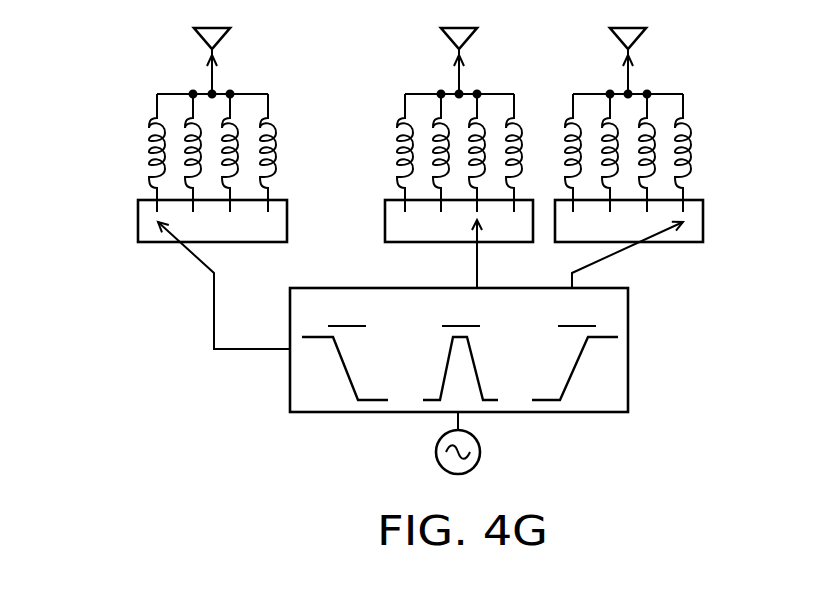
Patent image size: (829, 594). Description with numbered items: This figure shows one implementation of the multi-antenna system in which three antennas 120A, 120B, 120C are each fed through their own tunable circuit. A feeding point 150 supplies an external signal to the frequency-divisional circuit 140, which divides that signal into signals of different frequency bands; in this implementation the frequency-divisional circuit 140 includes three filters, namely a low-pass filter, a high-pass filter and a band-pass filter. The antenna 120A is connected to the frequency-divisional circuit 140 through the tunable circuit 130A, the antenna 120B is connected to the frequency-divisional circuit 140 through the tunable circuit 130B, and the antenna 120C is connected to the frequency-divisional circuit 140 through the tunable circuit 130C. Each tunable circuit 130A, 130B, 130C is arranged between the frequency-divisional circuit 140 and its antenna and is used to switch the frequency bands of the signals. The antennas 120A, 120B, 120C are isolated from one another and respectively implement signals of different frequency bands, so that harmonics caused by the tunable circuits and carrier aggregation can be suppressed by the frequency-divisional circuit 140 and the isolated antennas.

The antenna 120A is at (643, 41).
The antenna 120B is at (443, 42).
The antenna 120C is at (194, 42).
The tunable circuit 130A is at (690, 162).
The tunable circuit 130B is at (396, 157).
The tunable circuit 130C is at (148, 157).
The frequency-divisional circuit 140 is at (629, 348).
The feeding point 150 is at (481, 452).